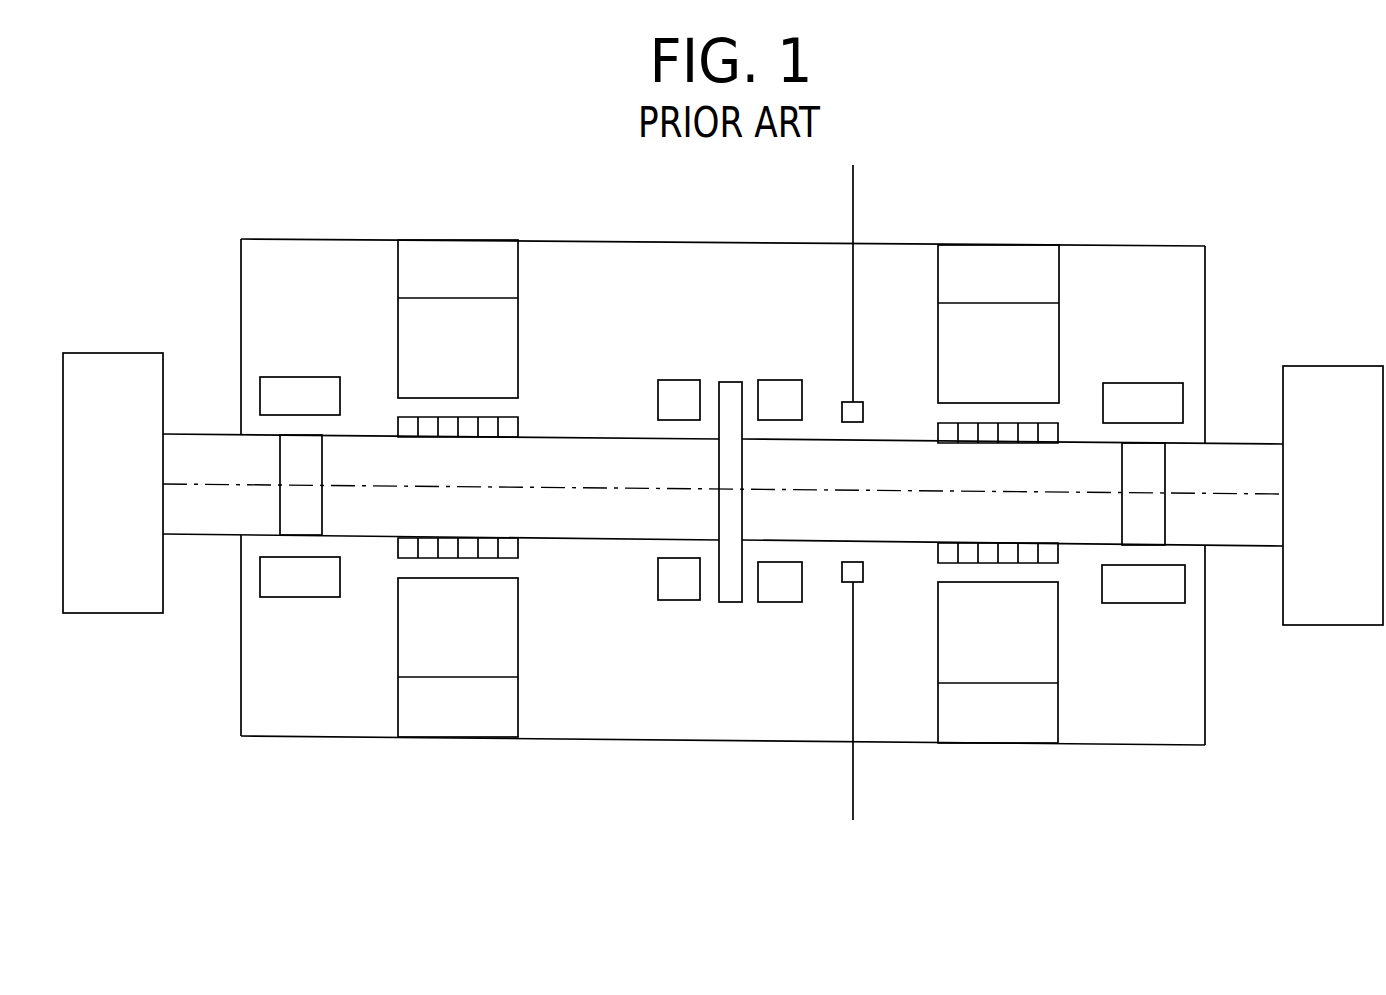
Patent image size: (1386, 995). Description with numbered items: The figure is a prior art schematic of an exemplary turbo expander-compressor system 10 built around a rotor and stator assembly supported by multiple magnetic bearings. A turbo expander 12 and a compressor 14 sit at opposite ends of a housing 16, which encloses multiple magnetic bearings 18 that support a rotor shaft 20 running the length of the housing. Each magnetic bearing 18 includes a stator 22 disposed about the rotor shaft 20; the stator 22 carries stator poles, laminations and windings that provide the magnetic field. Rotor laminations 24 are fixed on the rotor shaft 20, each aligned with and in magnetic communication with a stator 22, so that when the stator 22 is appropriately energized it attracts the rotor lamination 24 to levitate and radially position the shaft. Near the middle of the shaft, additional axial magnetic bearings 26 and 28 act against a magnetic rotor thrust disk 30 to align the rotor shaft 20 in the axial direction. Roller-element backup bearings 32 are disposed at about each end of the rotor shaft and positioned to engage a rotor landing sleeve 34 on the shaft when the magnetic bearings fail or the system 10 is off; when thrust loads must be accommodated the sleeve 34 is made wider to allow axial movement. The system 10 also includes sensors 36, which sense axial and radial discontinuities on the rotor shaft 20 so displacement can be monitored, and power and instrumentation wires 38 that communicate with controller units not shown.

The turbo expander-compressor system 10 is at (133, 240).
The turbo expander 12 is at (112, 615).
The compressor 14 is at (1337, 366).
The housing 16 is at (1168, 245).
The magnetic bearings 18 is at (453, 748).
The rotor shaft 20 is at (545, 541).
The stator 22 is at (392, 310).
The rotor laminations 24 is at (397, 427).
The axial magnetic bearing 26 is at (681, 380).
The axial magnetic bearing 28 is at (780, 380).
The magnetic rotor thrust disk 30 is at (732, 382).
The roller-element backup bearings 32 is at (288, 377).
The rotor landing sleeve 34 is at (280, 502).
The sensors 36 is at (866, 410).
The power and instrumentation wires 38 is at (855, 214).